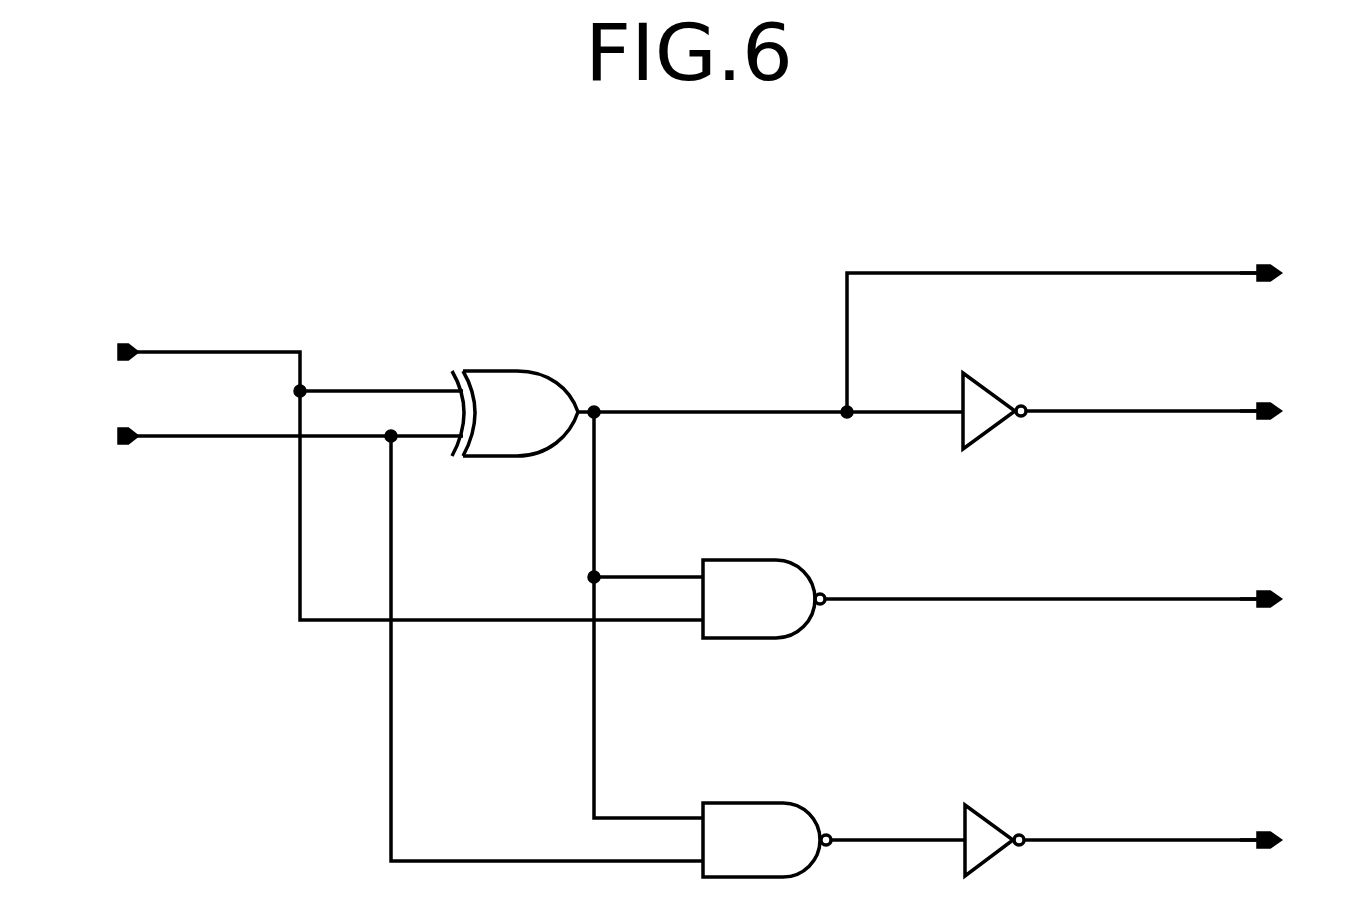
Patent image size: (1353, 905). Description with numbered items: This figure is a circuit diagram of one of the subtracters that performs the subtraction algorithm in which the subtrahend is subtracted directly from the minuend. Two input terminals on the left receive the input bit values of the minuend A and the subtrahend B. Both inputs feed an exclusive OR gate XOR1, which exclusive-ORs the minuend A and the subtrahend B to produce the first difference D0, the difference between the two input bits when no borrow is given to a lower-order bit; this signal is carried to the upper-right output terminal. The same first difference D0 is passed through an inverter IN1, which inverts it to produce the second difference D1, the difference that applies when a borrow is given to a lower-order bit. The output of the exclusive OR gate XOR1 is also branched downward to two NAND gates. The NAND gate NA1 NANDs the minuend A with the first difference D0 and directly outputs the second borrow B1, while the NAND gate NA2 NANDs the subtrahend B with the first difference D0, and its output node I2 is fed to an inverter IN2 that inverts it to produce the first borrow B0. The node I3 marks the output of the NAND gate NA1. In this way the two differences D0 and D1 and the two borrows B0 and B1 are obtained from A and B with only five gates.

The minuend A is at (388, 479).
The subtrahend B is at (388, 641).
The exclusive OR gate XOR1 is at (515, 413).
The NAND gate NA1 is at (764, 599).
The NAND gate NA2 is at (767, 840).
The inverter IN1 is at (995, 420).
The inverter IN2 is at (1001, 848).
The output node of NAND gate NA1 I3 is at (1039, 577).
The output node of NAND gate NA2 I2 is at (895, 819).
The first difference D0 is at (1285, 272).
The second difference D1 is at (1283, 410).
The second borrow B1 is at (1280, 601).
The first borrow B0 is at (1281, 840).